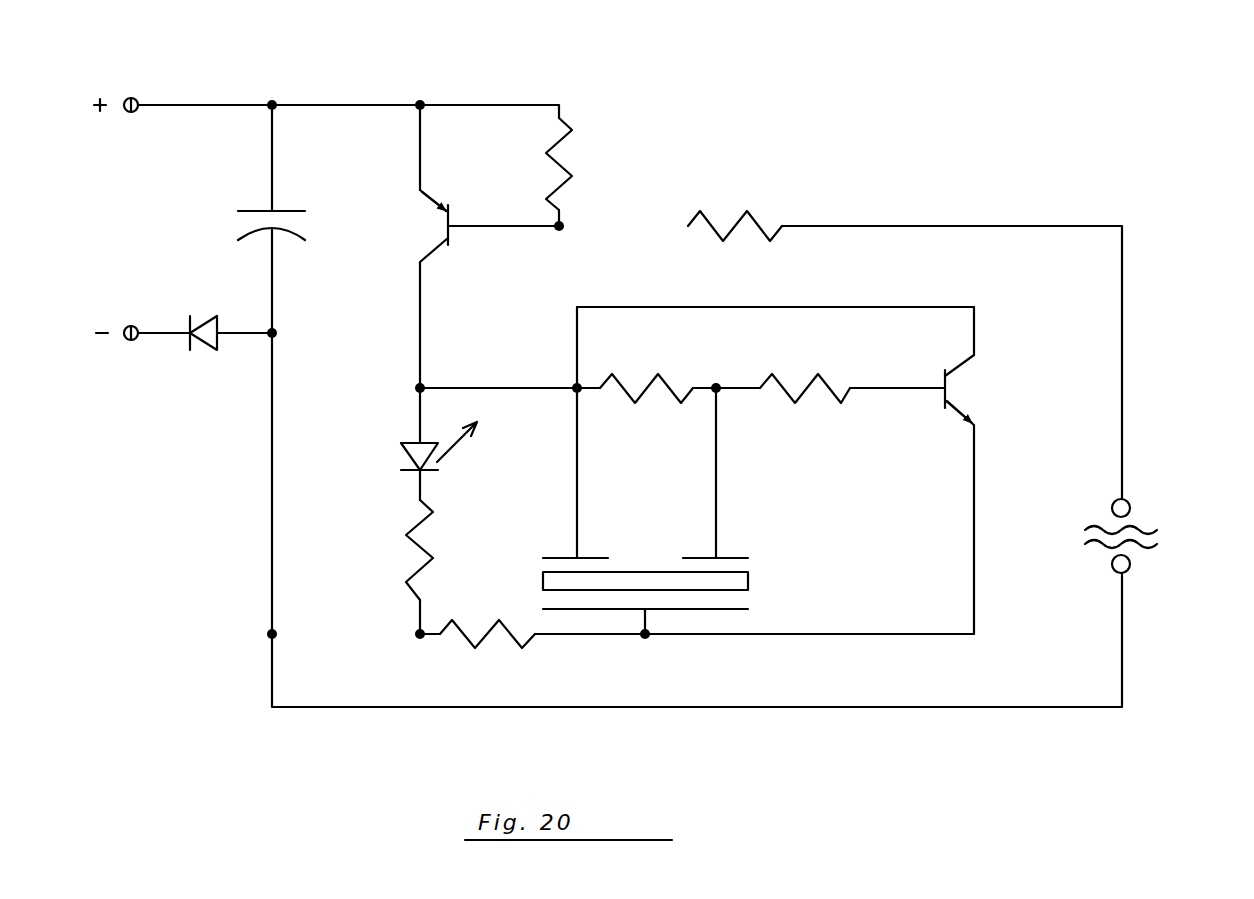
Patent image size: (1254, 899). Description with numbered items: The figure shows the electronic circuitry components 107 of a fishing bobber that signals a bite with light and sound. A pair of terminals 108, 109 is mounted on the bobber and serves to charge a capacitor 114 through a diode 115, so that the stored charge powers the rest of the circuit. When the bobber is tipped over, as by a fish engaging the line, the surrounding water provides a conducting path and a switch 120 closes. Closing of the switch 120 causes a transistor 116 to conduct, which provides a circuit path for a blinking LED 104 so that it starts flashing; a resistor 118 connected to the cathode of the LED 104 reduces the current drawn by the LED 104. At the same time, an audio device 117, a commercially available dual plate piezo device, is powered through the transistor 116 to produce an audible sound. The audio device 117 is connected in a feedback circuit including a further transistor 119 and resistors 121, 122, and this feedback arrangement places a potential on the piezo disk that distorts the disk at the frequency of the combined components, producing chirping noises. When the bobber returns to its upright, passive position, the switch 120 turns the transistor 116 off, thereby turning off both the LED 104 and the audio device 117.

The blinking LED 104 is at (406, 441).
The electronic circuitry components 107 is at (775, 294).
The terminal 108 is at (128, 96).
The terminal 109 is at (126, 344).
The capacitor 114 is at (246, 208).
The diode 115 is at (211, 317).
The transistor 116 is at (453, 238).
The audio device 117 is at (753, 571).
The resistor 118 is at (406, 560).
The transistor 119 is at (964, 365).
The switch 120 is at (1133, 499).
The resistor 121 is at (618, 382).
The resistor 122 is at (773, 383).